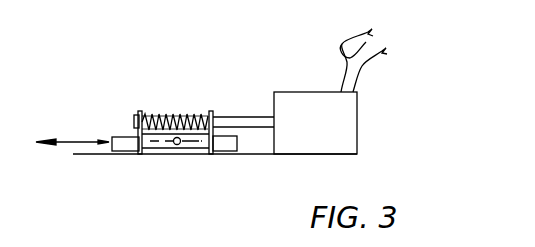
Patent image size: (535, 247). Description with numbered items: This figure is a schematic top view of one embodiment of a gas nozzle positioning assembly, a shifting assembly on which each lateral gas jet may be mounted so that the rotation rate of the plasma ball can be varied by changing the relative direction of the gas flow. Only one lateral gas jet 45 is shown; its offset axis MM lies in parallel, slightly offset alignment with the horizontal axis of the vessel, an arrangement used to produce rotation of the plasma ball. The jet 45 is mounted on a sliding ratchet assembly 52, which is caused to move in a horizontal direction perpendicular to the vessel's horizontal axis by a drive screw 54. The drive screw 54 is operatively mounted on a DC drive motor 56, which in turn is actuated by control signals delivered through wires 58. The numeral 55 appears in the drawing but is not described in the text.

The lateral gas jet 45 is at (170, 150).
The sliding ratchet assembly 52 is at (131, 152).
The drive screw 54 is at (183, 114).
The lever 55 is at (234, 243).
The DC drive motor 56 is at (320, 60).
The wires 58 is at (345, 30).
The offset axis MM is at (188, 150).